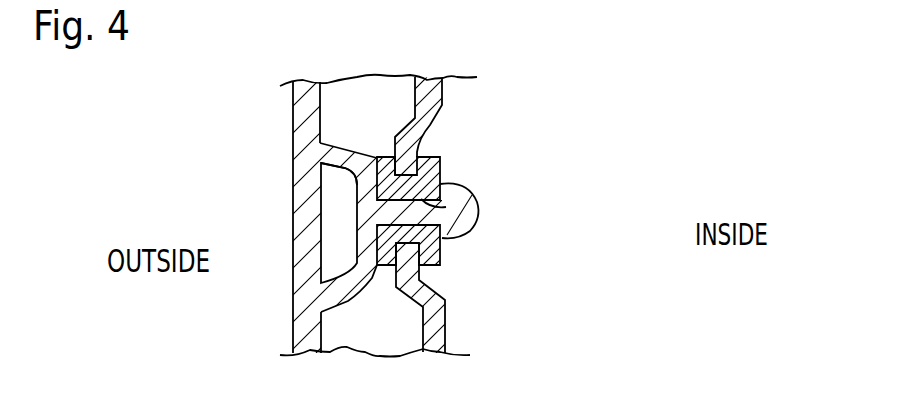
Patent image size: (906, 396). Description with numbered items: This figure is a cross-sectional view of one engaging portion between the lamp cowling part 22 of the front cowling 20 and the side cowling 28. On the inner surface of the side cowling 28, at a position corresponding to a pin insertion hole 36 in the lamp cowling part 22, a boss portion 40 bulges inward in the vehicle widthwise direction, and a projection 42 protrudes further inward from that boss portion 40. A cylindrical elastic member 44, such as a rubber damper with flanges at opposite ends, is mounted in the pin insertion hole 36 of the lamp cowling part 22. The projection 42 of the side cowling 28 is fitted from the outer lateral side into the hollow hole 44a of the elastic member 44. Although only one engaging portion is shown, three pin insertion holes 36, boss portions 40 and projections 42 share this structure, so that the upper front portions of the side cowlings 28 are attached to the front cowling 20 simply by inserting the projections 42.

The front cowling 20 is at (459, 126).
The lamp cowling part 22 is at (443, 106).
The side cowling 28 is at (297, 123).
The pin insertion hole 36 is at (443, 177).
The boss portion 40 is at (340, 157).
The projection 42 is at (460, 223).
The elastic member 44 is at (440, 267).
The hollow hole 44a is at (445, 207).